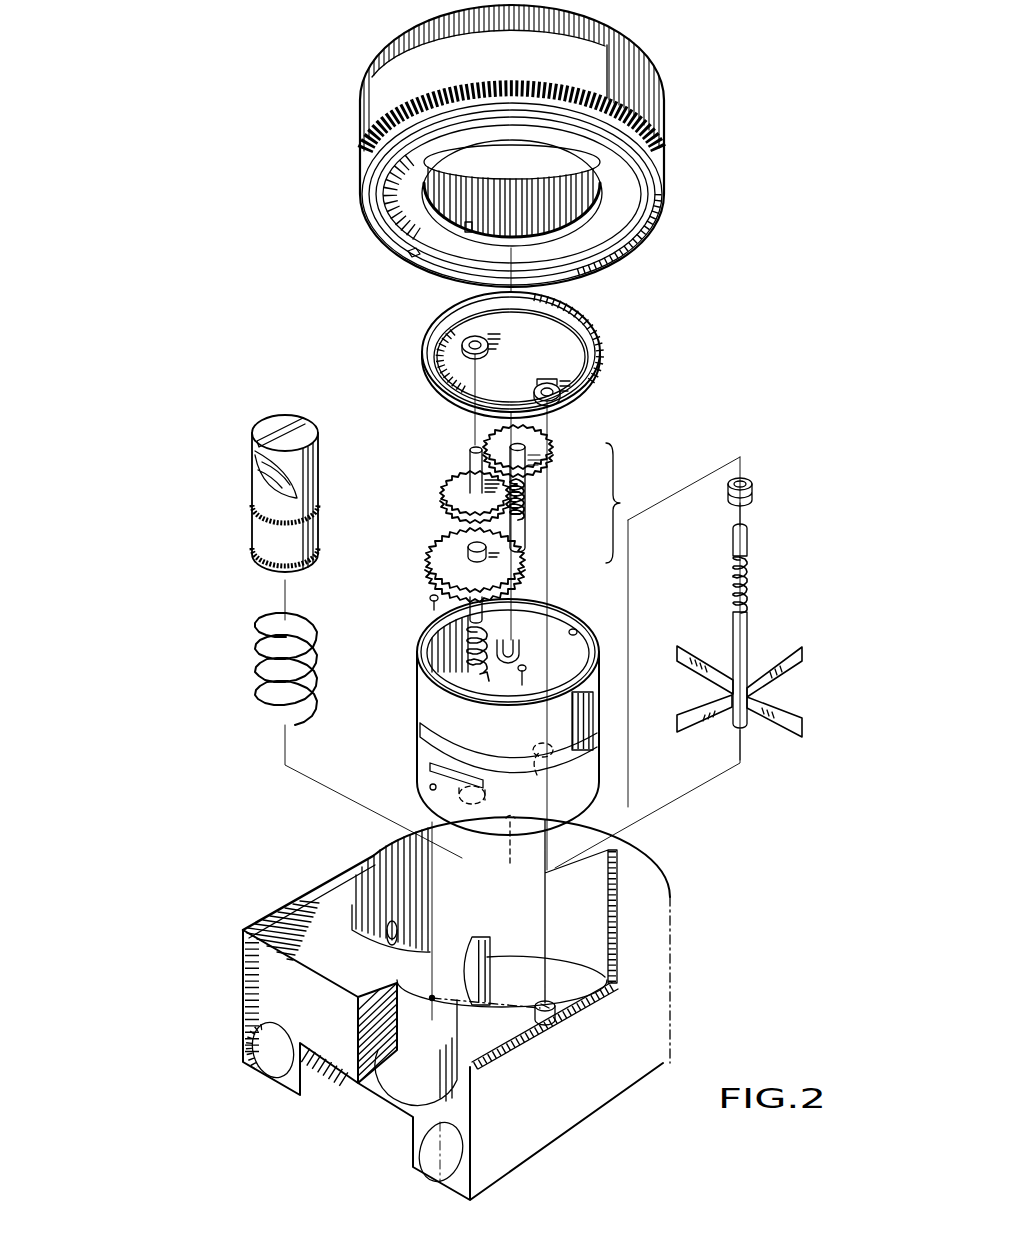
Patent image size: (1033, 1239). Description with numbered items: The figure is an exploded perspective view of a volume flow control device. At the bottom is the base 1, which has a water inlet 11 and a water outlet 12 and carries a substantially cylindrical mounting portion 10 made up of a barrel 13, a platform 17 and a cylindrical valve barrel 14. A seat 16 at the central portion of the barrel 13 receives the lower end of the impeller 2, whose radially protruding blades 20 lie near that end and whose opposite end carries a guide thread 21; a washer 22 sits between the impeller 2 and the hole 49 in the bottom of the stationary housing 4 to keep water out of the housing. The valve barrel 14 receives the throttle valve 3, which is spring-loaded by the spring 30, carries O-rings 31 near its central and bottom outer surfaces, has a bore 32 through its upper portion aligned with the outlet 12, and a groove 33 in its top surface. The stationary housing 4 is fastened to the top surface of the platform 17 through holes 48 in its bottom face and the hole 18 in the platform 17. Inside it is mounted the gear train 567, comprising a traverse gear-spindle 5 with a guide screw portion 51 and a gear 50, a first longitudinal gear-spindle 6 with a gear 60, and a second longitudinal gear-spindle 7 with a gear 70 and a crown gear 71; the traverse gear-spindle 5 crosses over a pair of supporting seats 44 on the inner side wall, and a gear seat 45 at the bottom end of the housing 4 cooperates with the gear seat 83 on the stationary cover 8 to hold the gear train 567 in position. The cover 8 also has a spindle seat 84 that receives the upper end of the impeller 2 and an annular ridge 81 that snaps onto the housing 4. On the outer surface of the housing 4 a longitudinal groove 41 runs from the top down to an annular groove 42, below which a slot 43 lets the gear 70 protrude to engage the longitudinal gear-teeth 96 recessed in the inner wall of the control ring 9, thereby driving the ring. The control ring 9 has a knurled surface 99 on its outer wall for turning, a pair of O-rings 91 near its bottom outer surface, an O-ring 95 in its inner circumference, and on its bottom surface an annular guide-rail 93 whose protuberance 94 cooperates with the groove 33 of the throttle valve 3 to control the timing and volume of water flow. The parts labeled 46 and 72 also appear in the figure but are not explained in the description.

The base 1 is at (288, 898).
The impeller 2 is at (750, 626).
The throttle valve 3 is at (251, 528).
The stationary housing 4 is at (418, 695).
The traverse gear-spindle 5 is at (522, 540).
The first longitudinal gear-spindle 6 is at (468, 468).
The second longitudinal gear-spindle 7 is at (428, 624).
The stationary cover 8 is at (594, 326).
The control ring 9 is at (356, 116).
The mounting portion 10 is at (406, 880).
The water inlet 11 is at (428, 1140).
The water outlet 12 is at (273, 1065).
The barrel 13 is at (497, 1001).
The cylindrical valve barrel 14 is at (388, 922).
The seat 16 is at (549, 1026).
The platform 17 is at (463, 945).
The hole 18 is at (434, 996).
The blades 20 is at (780, 737).
The guide thread 21 is at (748, 579).
The washer 22 is at (755, 485).
The spring 30 is at (258, 710).
The O-rings 31 is at (320, 546).
The bore 32 is at (266, 482).
The groove 33 is at (276, 425).
The longitudinal groove 41 is at (594, 712).
The annular groove 42 is at (600, 742).
The slot 43 is at (430, 766).
The supporting seats 44 is at (514, 646).
The gear seat 45 is at (486, 797).
The hole 46 is at (578, 632).
The holes 48 is at (511, 870).
The hole 49 is at (537, 775).
The gear 50 is at (545, 453).
The guide screw portion 51 is at (528, 498).
The gear 60 is at (445, 498).
The gear 70 is at (432, 569).
The crown gear 71 is at (466, 551).
The return spring 72 is at (487, 672).
The annular ridge 81 is at (440, 385).
The gear seat 83 is at (482, 353).
The spindle seat 84 is at (556, 401).
The O-rings 91 is at (666, 149).
The annular guide-rail 93 is at (373, 192).
The protuberance 94 is at (412, 258).
The O-ring 95 is at (553, 238).
The gear-teeth 96 is at (468, 234).
The knurled surface 99 is at (396, 46).
The gear train 567 is at (622, 498).